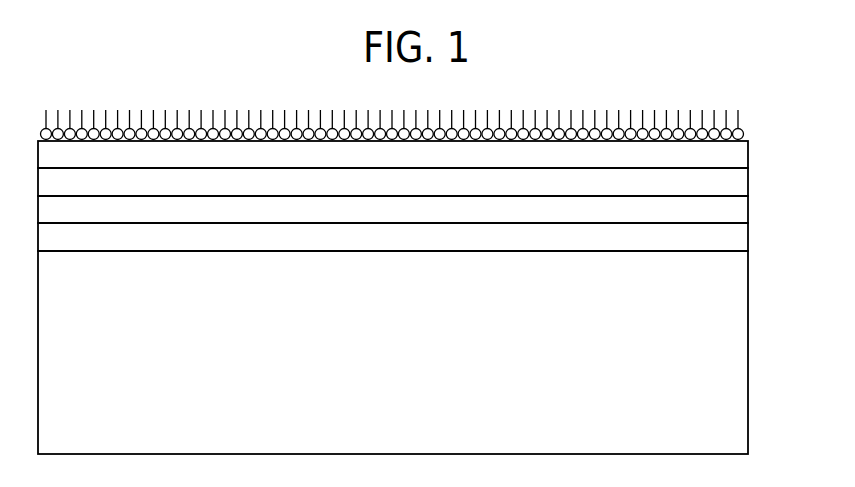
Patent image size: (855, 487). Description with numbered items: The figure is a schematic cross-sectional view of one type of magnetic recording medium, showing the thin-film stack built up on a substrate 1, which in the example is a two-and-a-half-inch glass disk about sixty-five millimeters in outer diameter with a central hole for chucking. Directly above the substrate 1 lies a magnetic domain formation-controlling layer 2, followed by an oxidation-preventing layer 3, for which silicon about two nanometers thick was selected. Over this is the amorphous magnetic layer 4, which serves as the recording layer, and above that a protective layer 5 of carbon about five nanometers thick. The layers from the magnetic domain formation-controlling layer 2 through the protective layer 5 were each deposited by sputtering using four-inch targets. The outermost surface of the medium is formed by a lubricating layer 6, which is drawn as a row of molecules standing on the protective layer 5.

The substrate 1 is at (738, 289).
The magnetic domain formation-controlling layer 2 is at (738, 239).
The oxidation-preventing layer 3 is at (738, 212).
The amorphous magnetic layer 4 is at (738, 185).
The protective layer 5 is at (738, 157).
The lubricating layer 6 is at (738, 106).